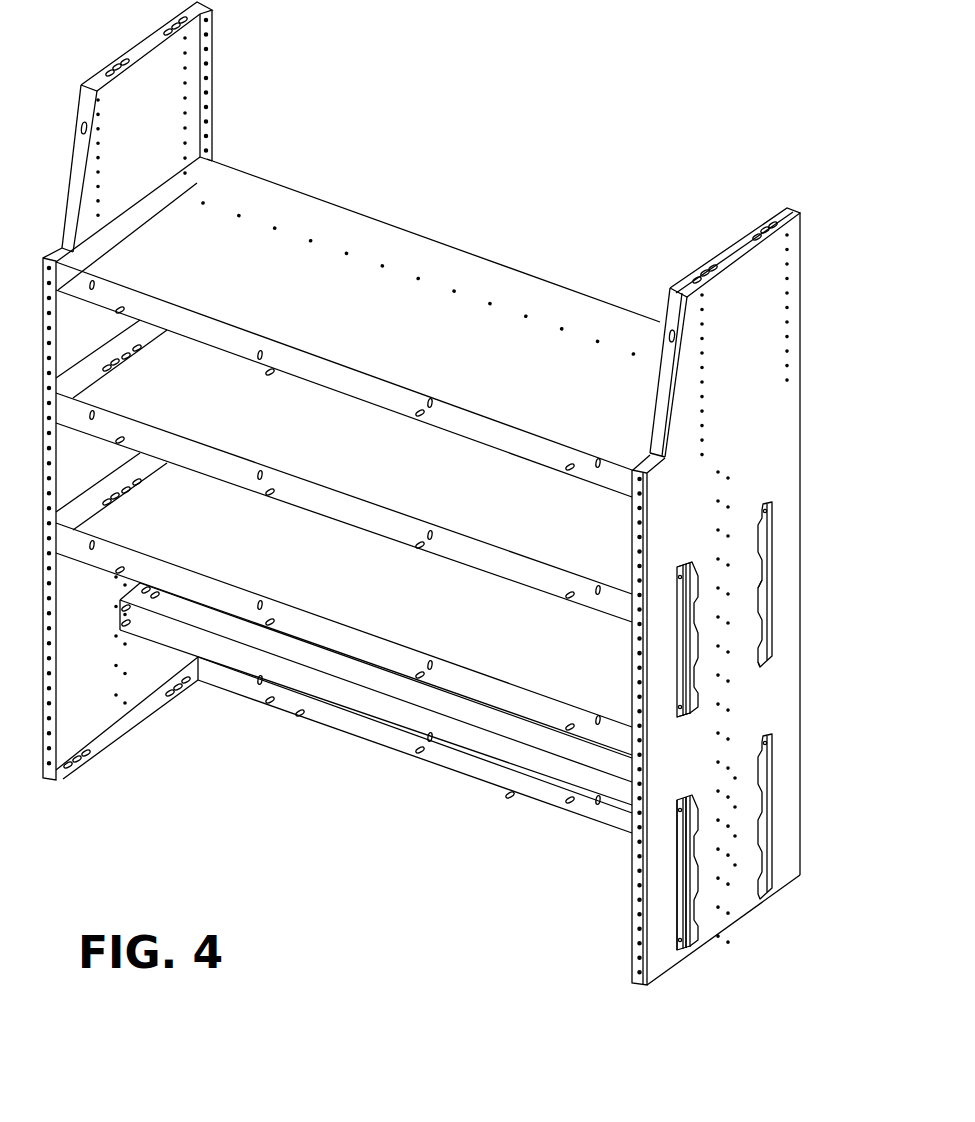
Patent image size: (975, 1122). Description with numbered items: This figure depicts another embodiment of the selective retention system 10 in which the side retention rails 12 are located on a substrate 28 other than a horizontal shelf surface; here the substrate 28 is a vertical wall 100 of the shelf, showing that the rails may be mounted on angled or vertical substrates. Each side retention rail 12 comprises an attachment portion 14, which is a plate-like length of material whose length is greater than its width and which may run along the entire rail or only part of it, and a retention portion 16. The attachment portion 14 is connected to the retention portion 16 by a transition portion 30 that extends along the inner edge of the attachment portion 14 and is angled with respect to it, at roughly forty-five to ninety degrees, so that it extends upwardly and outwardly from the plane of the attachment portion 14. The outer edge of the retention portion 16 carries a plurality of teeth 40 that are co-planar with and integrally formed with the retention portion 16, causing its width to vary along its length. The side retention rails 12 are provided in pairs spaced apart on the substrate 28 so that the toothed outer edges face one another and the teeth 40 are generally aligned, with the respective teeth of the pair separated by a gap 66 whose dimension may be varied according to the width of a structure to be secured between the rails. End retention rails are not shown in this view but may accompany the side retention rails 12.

The selective retention system 10 is at (805, 437).
The side retention rail 12 is at (765, 543).
The attachment portion 14 is at (675, 900).
The retention portion 16 is at (765, 827).
The substrate 28 is at (802, 258).
The transition portion 30 is at (687, 848).
The teeth 40 is at (762, 592).
The gap 66 is at (752, 660).
The vertical wall 100 is at (738, 284).